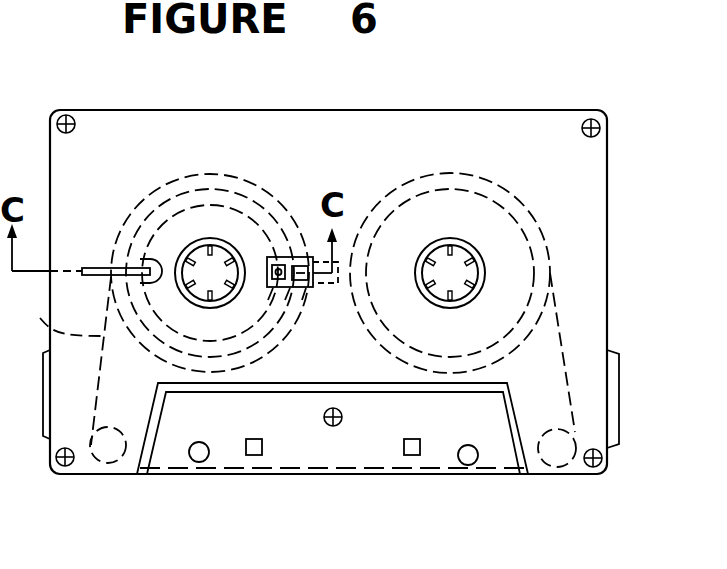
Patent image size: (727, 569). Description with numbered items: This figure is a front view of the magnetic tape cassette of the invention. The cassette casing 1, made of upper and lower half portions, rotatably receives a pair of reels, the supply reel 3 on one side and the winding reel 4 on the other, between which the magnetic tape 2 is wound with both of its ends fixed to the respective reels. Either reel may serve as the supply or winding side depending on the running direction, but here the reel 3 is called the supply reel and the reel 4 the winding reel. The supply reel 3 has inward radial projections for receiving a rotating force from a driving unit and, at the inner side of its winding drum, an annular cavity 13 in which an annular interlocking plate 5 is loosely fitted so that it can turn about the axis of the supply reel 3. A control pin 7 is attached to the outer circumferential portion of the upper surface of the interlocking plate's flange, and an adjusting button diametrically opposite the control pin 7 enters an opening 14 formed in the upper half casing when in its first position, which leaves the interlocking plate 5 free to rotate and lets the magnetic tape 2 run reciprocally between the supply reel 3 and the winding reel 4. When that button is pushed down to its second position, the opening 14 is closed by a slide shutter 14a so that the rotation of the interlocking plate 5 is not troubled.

The cassette casing 1 is at (598, 178).
The magnetic tape 2 is at (46, 318).
The supply reel 3 is at (183, 258).
The winding reel 4 is at (480, 255).
The annular interlocking plate 5 is at (210, 242).
The control pin 7 is at (97, 268).
The annular cavity 13 is at (250, 188).
The opening 14 is at (280, 257).
The slide shutter 14a is at (299, 292).